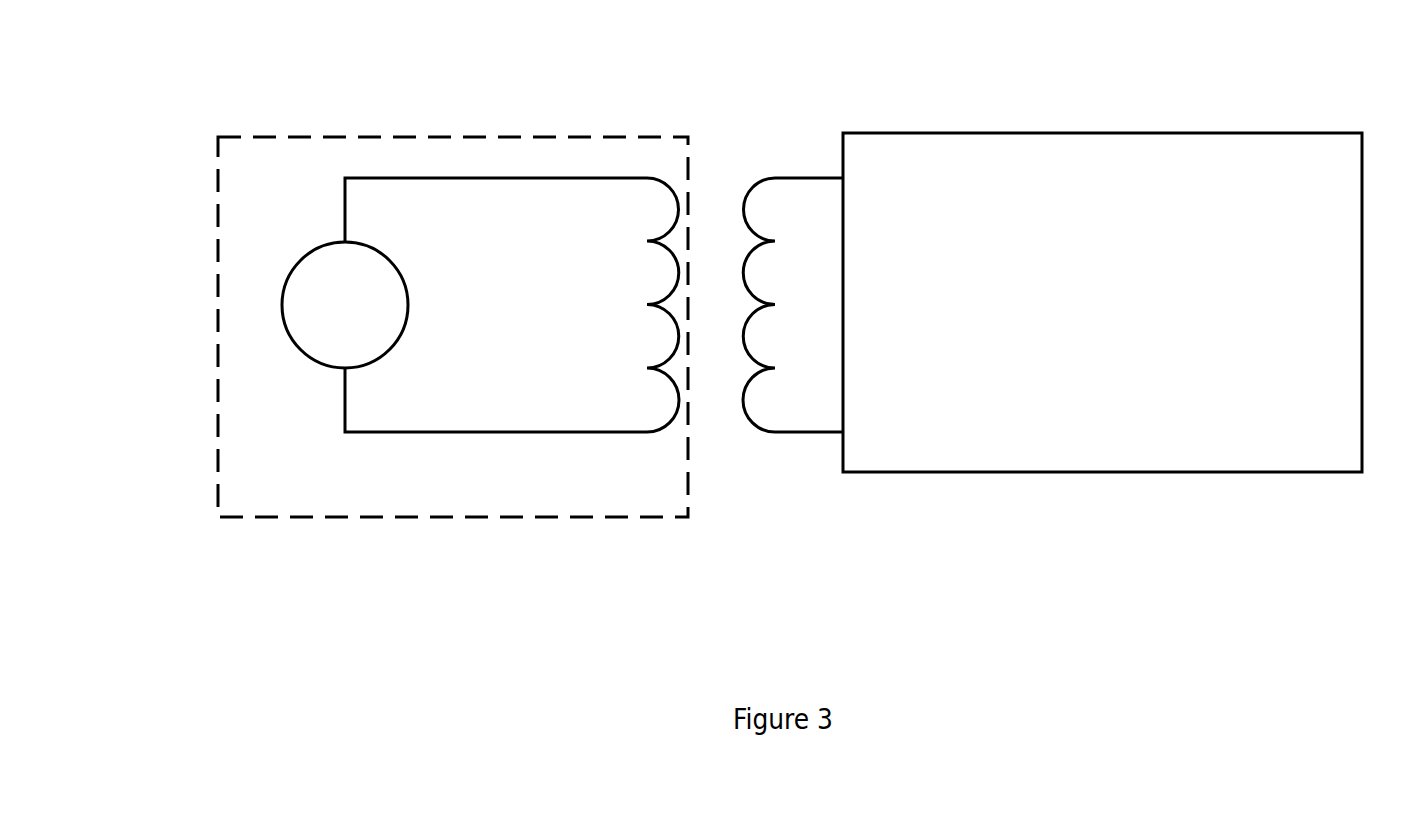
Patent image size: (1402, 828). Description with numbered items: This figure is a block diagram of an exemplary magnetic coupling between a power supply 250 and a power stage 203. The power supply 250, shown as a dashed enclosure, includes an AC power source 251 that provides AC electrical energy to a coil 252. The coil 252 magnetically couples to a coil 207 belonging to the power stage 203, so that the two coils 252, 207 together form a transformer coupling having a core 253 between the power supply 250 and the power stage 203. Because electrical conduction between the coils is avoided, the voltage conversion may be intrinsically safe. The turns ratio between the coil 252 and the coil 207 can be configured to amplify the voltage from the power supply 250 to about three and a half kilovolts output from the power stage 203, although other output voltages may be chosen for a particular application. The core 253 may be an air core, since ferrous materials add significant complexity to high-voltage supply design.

The power supply 250 is at (488, 277).
The AC power source 251 is at (273, 292).
The coil 252 is at (647, 280).
The core 253 is at (707, 150).
The coil 207 is at (784, 277).
The power stage 203 is at (1102, 302).